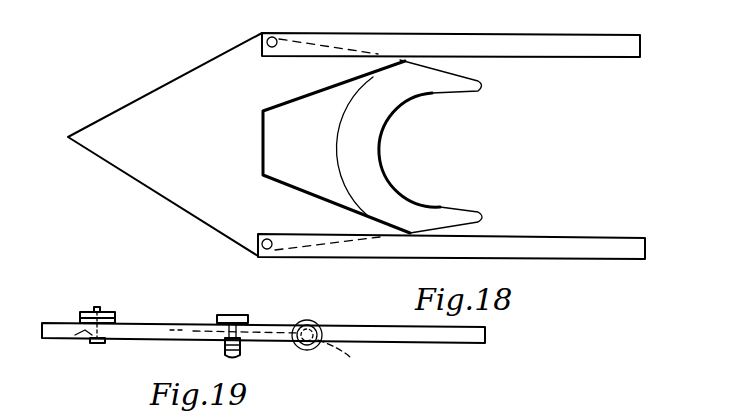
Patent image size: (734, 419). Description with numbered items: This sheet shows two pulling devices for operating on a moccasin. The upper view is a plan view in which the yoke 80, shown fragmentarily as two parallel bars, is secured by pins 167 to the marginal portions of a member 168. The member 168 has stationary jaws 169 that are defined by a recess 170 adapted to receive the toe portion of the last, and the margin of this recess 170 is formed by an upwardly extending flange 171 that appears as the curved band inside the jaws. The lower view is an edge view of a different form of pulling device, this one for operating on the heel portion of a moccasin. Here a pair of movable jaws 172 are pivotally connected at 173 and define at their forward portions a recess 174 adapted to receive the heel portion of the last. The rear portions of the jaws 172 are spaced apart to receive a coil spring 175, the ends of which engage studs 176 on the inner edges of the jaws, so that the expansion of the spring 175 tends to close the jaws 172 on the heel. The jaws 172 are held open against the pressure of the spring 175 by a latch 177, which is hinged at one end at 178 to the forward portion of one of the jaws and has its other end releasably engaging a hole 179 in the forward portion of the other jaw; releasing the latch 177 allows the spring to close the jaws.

In FIG. 18, the yoke 80 is at (440, 42).
In FIG. 18, the pins 167 is at (276, 38).
In FIG. 18, the member 168 is at (239, 144).
In FIG. 18, the stationary jaws 169 is at (486, 86).
In FIG. 18, the recess 170 is at (407, 113).
In FIG. 18, the upwardly extending flange 171 is at (354, 146).
In FIG. 19, the movable jaws 172 is at (387, 329).
In FIG. 19, the pivotal connection 173 is at (225, 347).
In FIG. 19, the recess 174 is at (186, 325).
In FIG. 19, the coil spring 175 is at (313, 321).
In FIG. 19, the studs 176 is at (322, 337).
In FIG. 19, the latch 177 is at (97, 343).
In FIG. 19, the hinge 178 is at (80, 316).
In FIG. 19, the hole 179 is at (76, 338).